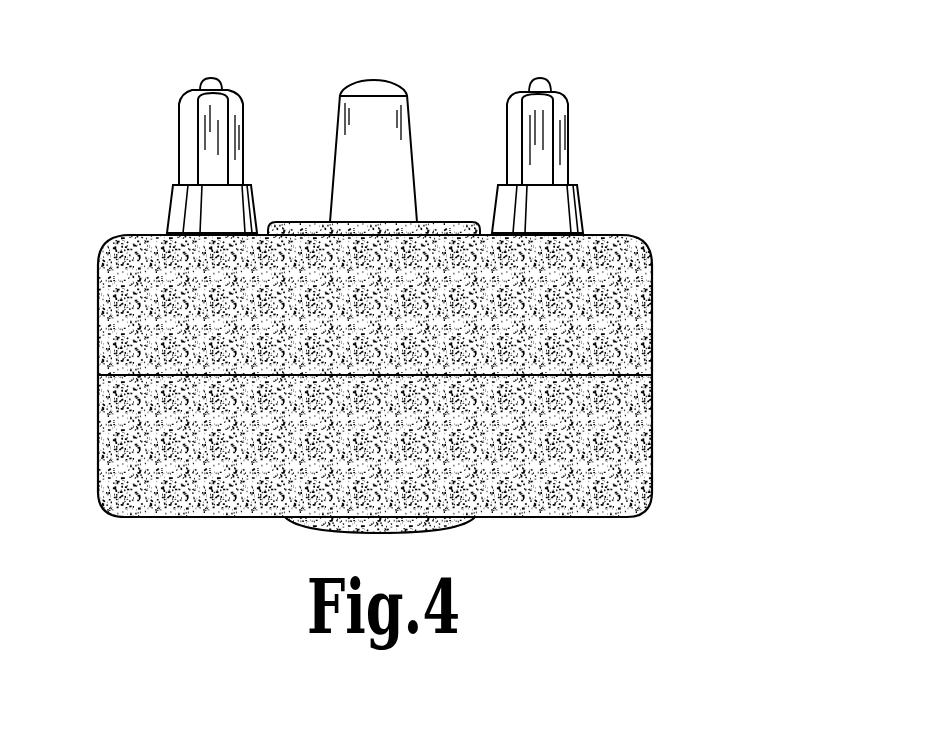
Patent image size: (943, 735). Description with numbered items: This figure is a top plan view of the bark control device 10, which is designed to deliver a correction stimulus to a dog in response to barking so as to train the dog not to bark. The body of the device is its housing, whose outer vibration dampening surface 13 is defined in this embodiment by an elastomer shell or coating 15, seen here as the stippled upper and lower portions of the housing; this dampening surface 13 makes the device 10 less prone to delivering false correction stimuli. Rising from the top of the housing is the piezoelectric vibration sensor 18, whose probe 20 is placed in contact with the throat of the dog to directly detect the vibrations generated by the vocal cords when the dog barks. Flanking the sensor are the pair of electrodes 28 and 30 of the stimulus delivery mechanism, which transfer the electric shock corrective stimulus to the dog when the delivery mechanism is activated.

The bark control device 10 is at (709, 100).
The outer vibration dampening surface 13 is at (145, 320).
The elastomer shell or coating 15 is at (610, 305).
The piezoelectric vibration sensor 18 is at (330, 133).
The probe 20 is at (414, 123).
The electrode 28 is at (570, 117).
The electrode 30 is at (179, 137).